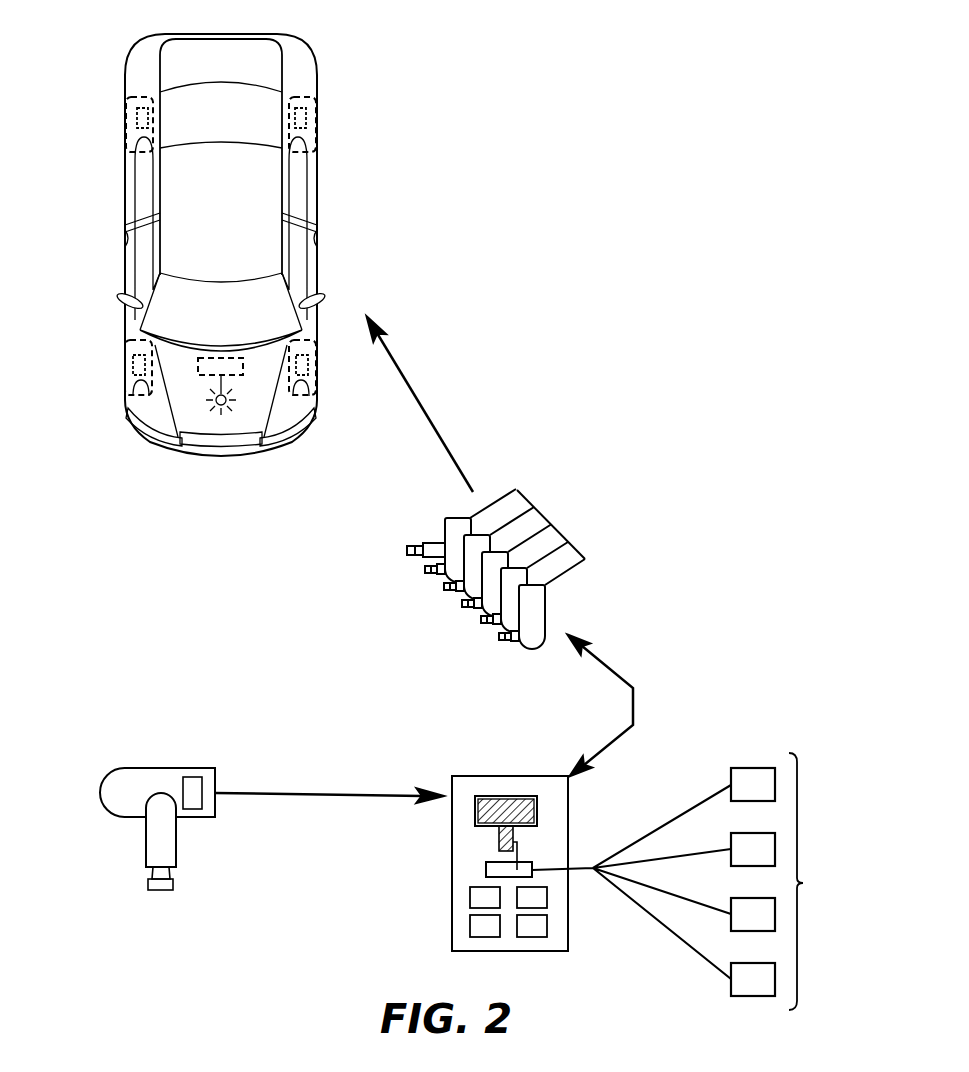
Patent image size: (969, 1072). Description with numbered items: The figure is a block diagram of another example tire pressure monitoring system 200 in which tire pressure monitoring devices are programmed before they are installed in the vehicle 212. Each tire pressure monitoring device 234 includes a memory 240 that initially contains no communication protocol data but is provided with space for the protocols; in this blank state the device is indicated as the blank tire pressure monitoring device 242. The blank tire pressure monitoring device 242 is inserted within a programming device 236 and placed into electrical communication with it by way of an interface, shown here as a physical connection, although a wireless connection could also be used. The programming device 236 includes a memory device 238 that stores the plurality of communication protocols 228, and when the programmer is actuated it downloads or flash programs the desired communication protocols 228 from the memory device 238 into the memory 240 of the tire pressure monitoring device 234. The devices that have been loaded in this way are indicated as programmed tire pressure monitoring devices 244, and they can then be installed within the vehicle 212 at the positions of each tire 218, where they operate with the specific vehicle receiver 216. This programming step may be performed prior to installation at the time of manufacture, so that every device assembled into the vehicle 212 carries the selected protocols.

The tire pressure monitoring system 200 is at (434, 138).
The vehicle 212 is at (297, 68).
The vehicle receiver 216 is at (243, 373).
The tire 218 is at (136, 103).
The communication protocols 228 is at (689, 881).
The tire pressure monitoring device 234 is at (138, 117).
The programming device 236 is at (440, 921).
The memory device 238 is at (485, 868).
The memory 240 is at (193, 802).
The blank tire pressure monitoring device 242 is at (112, 852).
The programmed tire pressure monitoring devices 244 is at (615, 563).